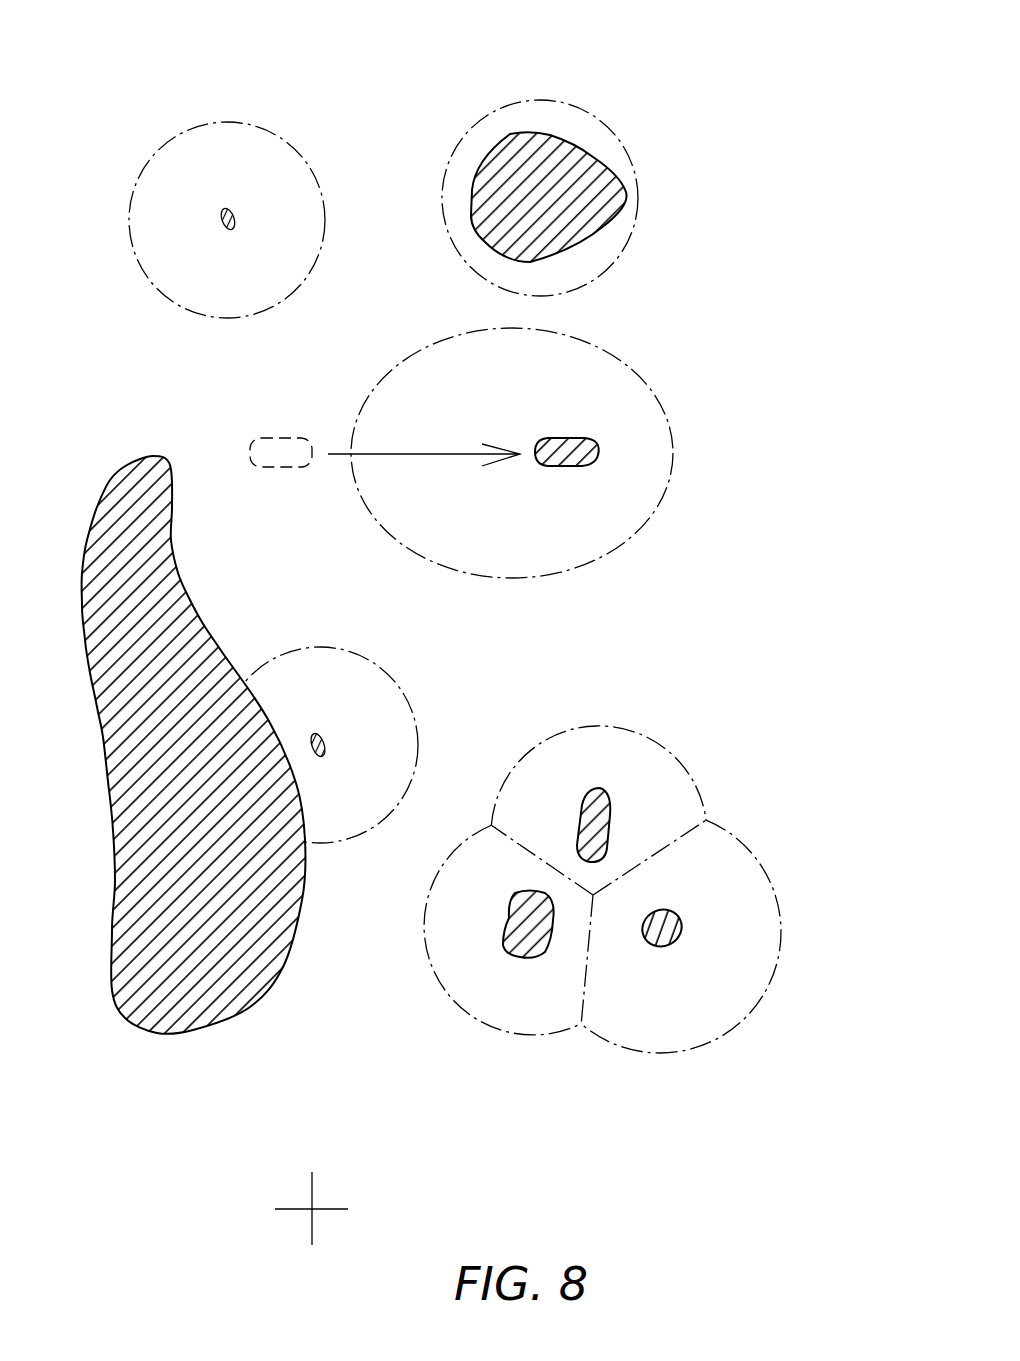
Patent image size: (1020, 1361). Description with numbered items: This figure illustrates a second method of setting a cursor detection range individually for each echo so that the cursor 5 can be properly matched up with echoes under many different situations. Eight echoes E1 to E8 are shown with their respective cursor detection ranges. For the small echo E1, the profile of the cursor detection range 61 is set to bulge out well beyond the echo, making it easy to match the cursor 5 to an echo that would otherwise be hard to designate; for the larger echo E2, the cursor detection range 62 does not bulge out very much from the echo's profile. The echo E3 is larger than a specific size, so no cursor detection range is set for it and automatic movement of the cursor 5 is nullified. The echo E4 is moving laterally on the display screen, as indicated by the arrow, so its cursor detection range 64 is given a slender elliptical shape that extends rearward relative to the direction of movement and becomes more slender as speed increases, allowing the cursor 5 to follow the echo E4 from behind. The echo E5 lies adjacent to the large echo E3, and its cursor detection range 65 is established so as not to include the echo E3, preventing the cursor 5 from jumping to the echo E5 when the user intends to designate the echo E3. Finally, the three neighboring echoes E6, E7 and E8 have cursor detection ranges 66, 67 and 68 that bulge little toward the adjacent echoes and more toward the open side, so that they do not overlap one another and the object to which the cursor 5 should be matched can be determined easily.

The cursor detection range 61 is at (190, 124).
The cursor detection range 62 is at (526, 100).
The cursor detection range 64 is at (572, 568).
The cursor detection range 65 is at (277, 656).
The cursor detection range 66 is at (636, 732).
The cursor detection range 67 is at (528, 1034).
The cursor detection range 68 is at (713, 1042).
The cursor 5 is at (258, 1230).
The echo E1 is at (233, 230).
The echo E2 is at (487, 233).
The echo E3 is at (120, 487).
The echo E4 is at (553, 438).
The echo E5 is at (323, 757).
The echo E6 is at (590, 822).
The echo E7 is at (523, 932).
The echo E8 is at (668, 935).